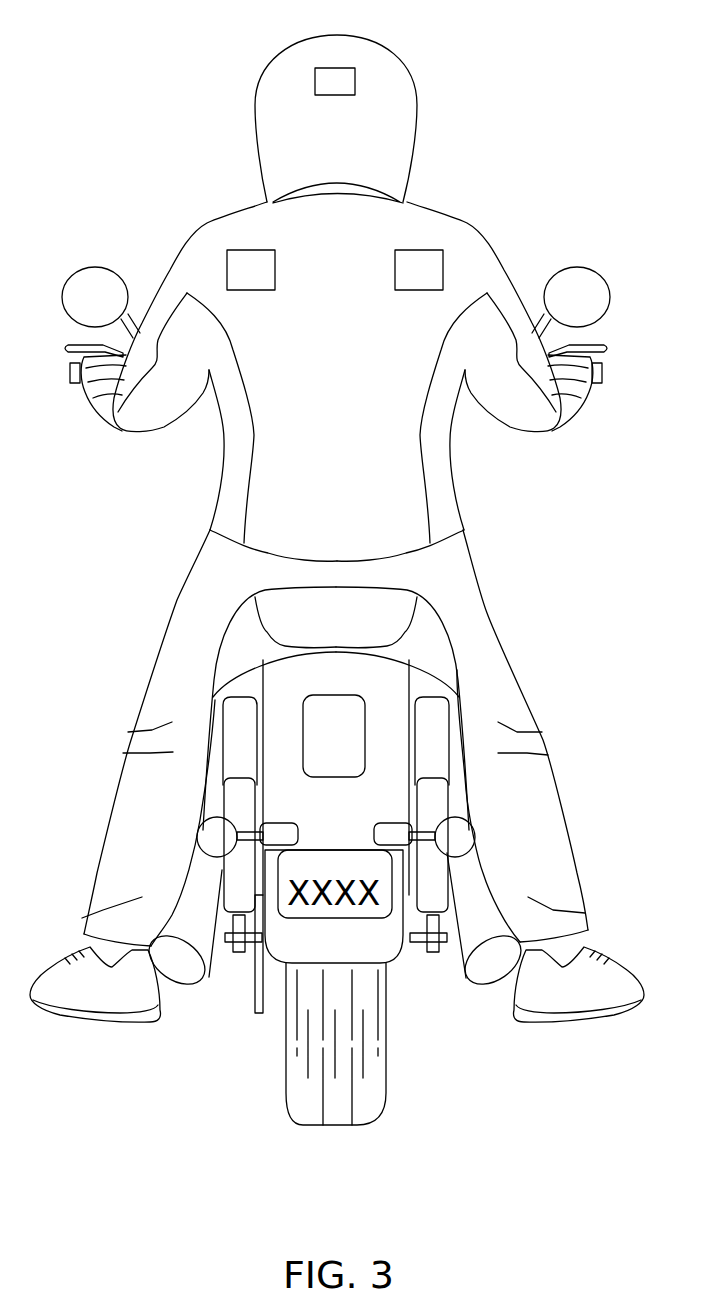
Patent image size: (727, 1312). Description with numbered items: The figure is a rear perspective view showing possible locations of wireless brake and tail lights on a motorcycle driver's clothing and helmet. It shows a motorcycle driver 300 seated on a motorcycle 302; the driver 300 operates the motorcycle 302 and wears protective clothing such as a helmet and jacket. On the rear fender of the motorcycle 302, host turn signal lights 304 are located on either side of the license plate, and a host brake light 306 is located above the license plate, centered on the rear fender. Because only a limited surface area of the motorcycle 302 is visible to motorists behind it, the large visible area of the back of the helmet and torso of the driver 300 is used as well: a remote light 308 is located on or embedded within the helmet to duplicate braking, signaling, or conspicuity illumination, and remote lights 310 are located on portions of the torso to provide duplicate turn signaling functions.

The motorcycle driver 300 is at (168, 490).
The motorcycle 302 is at (236, 1038).
The host turn signal lights 304 is at (212, 833).
The host brake light 306 is at (348, 732).
The remote light 308 is at (355, 75).
The remote lights 310 is at (242, 260).